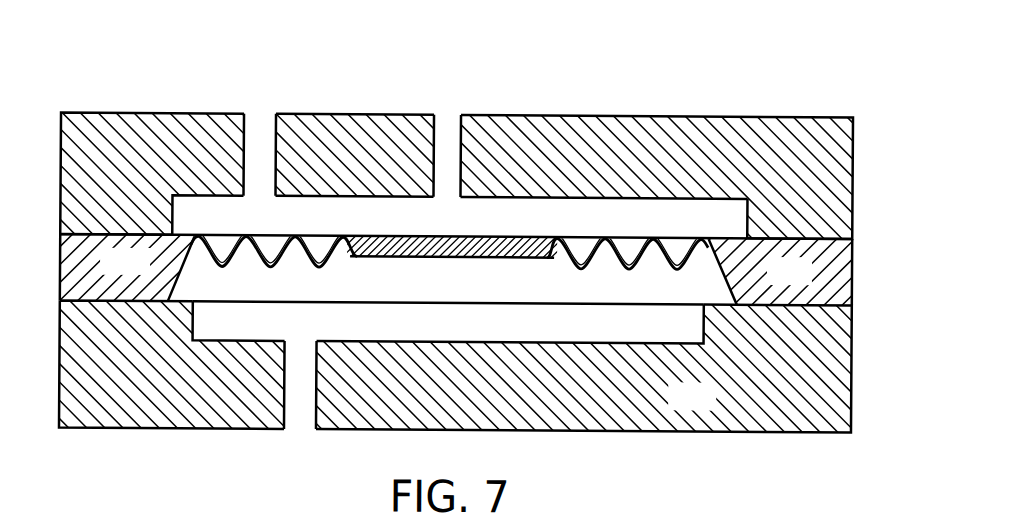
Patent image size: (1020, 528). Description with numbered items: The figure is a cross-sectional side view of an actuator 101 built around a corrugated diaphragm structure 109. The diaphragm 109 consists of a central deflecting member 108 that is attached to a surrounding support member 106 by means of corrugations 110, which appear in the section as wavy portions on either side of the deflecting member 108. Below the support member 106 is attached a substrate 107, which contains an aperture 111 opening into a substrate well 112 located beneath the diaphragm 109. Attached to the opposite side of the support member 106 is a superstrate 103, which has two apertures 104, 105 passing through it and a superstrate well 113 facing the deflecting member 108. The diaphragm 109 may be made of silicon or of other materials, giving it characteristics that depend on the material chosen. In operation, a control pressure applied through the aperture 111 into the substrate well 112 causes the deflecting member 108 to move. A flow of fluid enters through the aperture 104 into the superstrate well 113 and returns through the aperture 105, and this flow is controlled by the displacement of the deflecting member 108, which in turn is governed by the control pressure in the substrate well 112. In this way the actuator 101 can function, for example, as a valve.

The actuator 101 is at (451, 60).
The superstrate 103 is at (852, 179).
The aperture 104 is at (449, 129).
The aperture 105 is at (259, 129).
The support member 106 is at (147, 275).
The substrate 107 is at (714, 406).
The deflecting member 108 is at (449, 250).
The corrugated diaphragm structure 109 is at (710, 276).
The corrugations 110 is at (253, 237).
The aperture 111 is at (306, 418).
The substrate well 112 is at (465, 343).
The superstrate well 113 is at (567, 199).